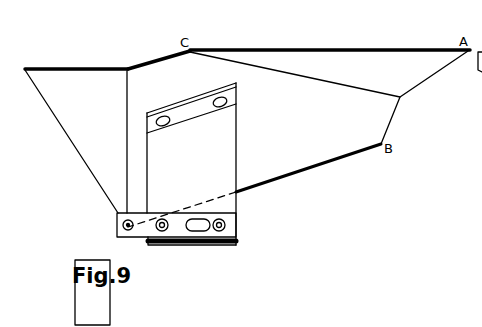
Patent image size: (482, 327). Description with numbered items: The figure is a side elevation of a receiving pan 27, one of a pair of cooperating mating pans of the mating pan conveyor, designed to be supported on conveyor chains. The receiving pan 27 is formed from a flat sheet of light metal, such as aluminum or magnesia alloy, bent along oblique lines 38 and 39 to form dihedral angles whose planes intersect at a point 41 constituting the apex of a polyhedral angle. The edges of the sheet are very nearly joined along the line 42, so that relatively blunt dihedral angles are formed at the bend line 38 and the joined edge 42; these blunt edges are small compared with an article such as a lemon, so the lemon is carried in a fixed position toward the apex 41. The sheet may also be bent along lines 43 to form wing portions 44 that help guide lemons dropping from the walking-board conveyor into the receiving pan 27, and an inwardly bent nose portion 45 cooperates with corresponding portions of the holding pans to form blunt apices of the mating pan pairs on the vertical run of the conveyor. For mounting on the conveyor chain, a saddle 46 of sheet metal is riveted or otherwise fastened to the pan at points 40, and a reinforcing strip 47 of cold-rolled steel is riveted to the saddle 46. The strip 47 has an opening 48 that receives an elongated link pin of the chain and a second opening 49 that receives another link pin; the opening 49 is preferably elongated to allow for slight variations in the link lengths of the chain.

The receiving pan 27 is at (343, 183).
The oblique bend line 38 is at (352, 160).
The oblique bend line 39 is at (127, 157).
The fastening points 40 is at (230, 86).
The apex point 41 is at (117, 224).
The joined edge line 42 is at (73, 152).
The bend lines for wing portions 43 is at (334, 85).
The wing portions 44 is at (394, 62).
The inwardly bent nose portion 45 is at (26, 69).
The saddle 46 is at (227, 167).
The reinforcing strip 47 is at (143, 232).
The opening 48 is at (117, 232).
The elongated opening 49 is at (200, 229).